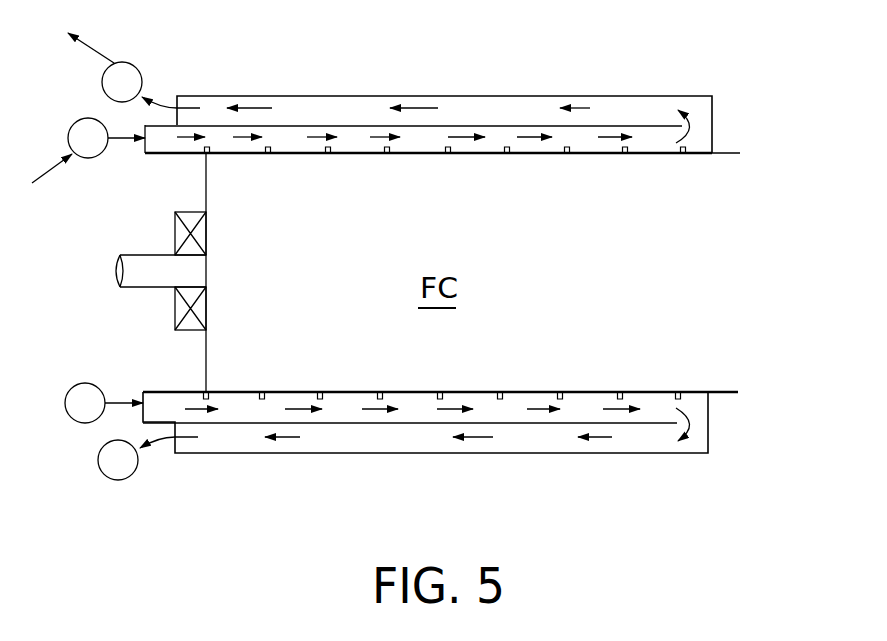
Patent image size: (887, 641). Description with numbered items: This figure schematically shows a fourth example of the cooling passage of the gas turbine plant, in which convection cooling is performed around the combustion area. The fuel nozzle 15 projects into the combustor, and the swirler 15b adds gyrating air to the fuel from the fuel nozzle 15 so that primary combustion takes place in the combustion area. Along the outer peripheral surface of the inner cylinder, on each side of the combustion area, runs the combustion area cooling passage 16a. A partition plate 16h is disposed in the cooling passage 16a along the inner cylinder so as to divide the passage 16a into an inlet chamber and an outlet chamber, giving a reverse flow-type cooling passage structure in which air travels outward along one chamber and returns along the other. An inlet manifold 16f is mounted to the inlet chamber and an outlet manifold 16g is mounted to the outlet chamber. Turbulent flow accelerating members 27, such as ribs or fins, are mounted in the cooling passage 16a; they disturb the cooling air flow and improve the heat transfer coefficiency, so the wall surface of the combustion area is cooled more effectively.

The combustion area cooling passage 16a is at (476, 84).
The partition plate 16h is at (349, 126).
The turbulent flow accelerating members 27 is at (448, 154).
The inlet manifold 16f is at (93, 160).
The outlet manifold 16g is at (140, 62).
The fuel nozzle 15 is at (138, 282).
The swirler 15b is at (178, 331).